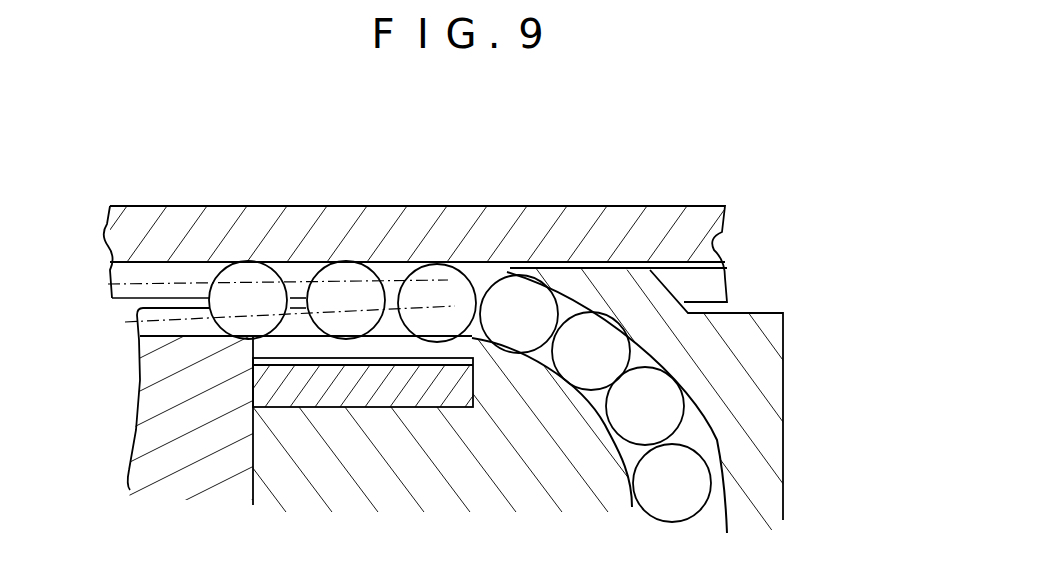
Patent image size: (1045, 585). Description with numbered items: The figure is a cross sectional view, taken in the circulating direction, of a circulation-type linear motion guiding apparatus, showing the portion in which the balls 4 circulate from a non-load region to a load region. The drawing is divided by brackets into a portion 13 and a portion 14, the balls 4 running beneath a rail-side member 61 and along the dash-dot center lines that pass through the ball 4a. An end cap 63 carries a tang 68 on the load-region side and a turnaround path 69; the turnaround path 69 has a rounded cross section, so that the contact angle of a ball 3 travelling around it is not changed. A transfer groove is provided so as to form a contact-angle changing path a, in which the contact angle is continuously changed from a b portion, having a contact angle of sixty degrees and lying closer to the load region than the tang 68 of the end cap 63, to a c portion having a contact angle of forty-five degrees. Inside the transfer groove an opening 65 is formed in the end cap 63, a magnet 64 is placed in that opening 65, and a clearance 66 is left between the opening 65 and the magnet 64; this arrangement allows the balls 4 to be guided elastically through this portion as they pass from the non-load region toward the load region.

The slider portion 13 is at (246, 148).
The rail portion 14 is at (815, 153).
The balls 4 is at (153, 317).
The ball 4a is at (363, 308).
The rail body 61 is at (690, 232).
The tang 68 is at (605, 280).
The ball 3 is at (598, 350).
The turnaround path 69 is at (710, 437).
The end cap 63 is at (782, 497).
The magnet 64 is at (322, 378).
The opening 65 is at (277, 410).
The clearance 66 is at (439, 360).
The contact-angle changing path a is at (247, 196).
The b portion b is at (437, 310).
The c portion c is at (242, 330).